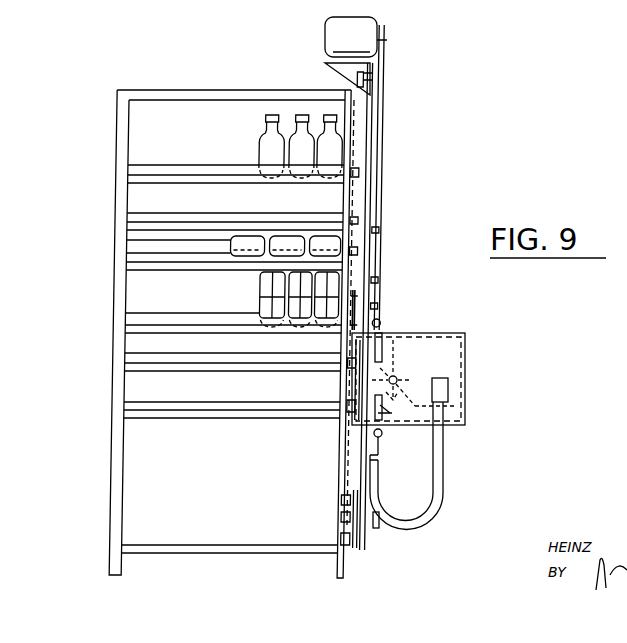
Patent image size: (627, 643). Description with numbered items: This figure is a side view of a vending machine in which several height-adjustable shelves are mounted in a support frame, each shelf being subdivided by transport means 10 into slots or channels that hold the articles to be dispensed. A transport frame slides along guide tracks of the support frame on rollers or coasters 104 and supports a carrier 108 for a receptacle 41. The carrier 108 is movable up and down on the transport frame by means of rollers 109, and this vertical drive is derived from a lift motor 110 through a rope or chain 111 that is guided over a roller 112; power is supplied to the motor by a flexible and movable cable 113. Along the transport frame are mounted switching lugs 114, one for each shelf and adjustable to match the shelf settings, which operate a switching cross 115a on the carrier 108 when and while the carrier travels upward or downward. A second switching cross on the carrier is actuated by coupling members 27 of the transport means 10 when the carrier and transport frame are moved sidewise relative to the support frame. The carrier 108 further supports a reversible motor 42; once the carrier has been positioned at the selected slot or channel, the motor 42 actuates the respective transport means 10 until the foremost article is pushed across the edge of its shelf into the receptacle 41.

The transport means 10 is at (130, 172).
The coupling members 27 is at (362, 173).
The receptacle 41 is at (450, 398).
The reversible motor 42 is at (387, 436).
The rollers or coasters 104 is at (375, 76).
The carrier 108 is at (466, 362).
The rollers 109 is at (356, 400).
The lift motor 110 is at (330, 37).
The rope or chain 111 is at (385, 135).
The roller 112 is at (382, 530).
The cable 113 is at (442, 500).
The switching lugs 114 is at (381, 280).
The switching cross 115a is at (396, 362).